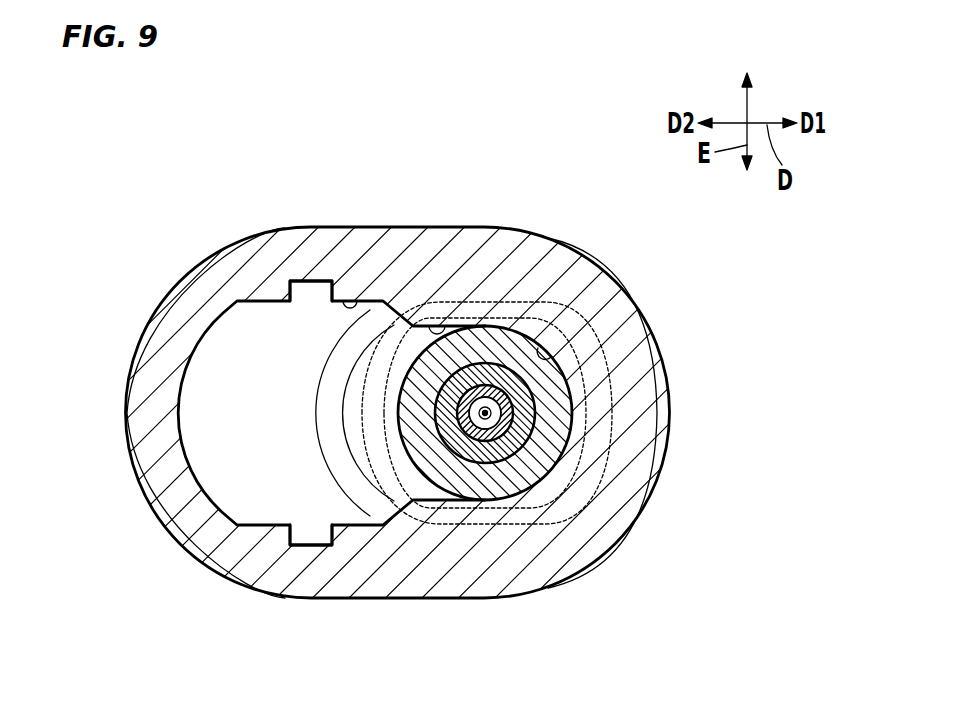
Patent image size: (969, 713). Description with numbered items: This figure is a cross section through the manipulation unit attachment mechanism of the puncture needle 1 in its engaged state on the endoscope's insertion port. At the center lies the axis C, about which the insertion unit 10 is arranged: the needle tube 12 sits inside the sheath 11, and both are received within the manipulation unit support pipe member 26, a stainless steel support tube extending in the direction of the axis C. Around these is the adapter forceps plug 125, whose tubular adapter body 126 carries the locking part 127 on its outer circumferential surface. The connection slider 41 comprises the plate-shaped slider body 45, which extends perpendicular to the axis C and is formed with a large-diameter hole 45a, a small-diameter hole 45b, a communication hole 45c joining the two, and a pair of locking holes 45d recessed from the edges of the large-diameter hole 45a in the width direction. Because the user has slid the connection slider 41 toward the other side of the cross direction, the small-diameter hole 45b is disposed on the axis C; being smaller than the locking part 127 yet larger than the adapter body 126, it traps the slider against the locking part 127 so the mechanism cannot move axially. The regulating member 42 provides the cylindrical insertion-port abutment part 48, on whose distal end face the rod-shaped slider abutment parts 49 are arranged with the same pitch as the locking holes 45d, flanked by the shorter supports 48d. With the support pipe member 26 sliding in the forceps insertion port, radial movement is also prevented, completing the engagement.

The puncture needle 1 is at (74, 210).
The insertion unit 10 is at (600, 419).
The sheath 11 is at (500, 405).
The needle tube 12 is at (512, 420).
The manipulation unit support pipe member 26 is at (513, 445).
The connection slider 41 is at (452, 335).
The regulating member 42 is at (352, 360).
The slider body 45 is at (383, 237).
The large-diameter hole 45a is at (357, 296).
The small-diameter hole 45b is at (575, 360).
The communication hole 45c is at (437, 322).
The locking holes 45d is at (298, 283).
The insertion-port abutment part 48 is at (360, 396).
The supports 48d is at (507, 292).
The slider abutment parts 49 is at (487, 290).
The adapter forceps plug 125 is at (531, 400).
The adapter body 126 is at (545, 372).
The locking part 127 is at (478, 421).
The axis C is at (485, 413).